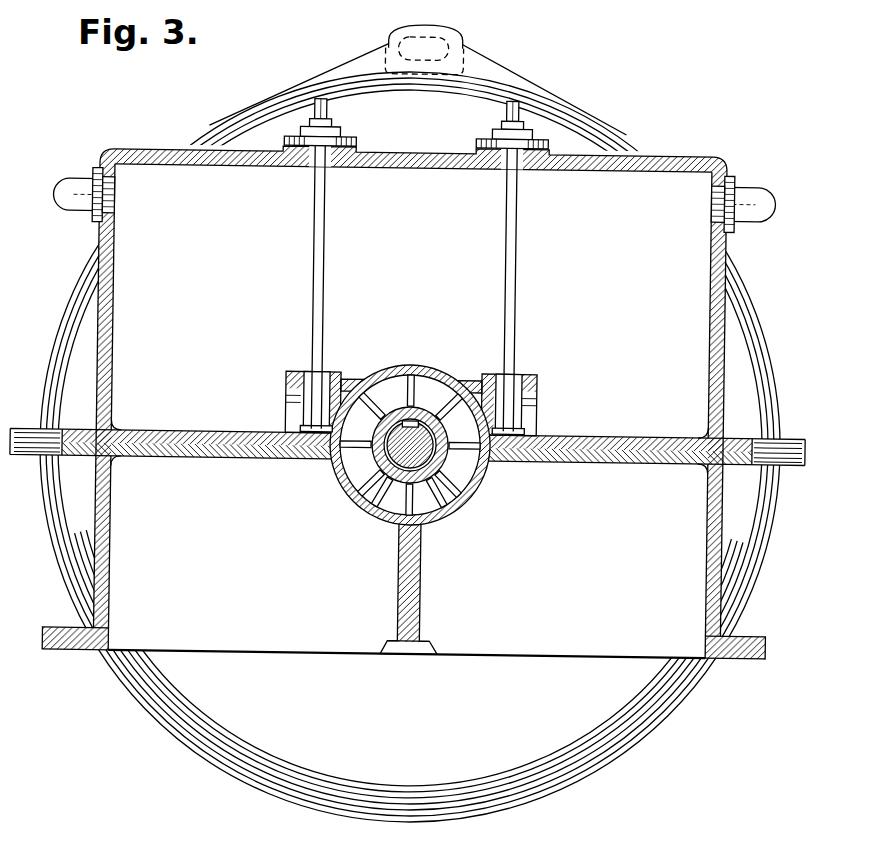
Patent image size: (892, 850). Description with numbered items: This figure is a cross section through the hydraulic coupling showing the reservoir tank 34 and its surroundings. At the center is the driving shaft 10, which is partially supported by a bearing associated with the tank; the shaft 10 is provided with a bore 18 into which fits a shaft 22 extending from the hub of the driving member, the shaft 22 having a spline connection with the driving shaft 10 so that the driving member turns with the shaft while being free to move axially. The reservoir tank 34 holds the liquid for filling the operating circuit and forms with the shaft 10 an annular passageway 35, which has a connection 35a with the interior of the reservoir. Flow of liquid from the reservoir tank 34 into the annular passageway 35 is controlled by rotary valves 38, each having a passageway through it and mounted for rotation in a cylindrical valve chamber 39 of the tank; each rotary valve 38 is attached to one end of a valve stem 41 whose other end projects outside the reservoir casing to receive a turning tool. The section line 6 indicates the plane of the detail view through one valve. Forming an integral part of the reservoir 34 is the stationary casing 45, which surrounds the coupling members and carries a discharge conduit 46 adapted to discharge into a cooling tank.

The section line 6- 6 is at (274, 403).
The driving shaft 10 is at (452, 467).
The bore 18 is at (430, 500).
The shaft 22 is at (400, 465).
The reservoir tank 34 is at (675, 190).
The annular passageway 35 is at (396, 385).
The connection 35a is at (563, 415).
The rotary valve 38 is at (312, 382).
The cylindrical valve chamber 39 is at (342, 378).
The valve stem 41 is at (310, 256).
The stationary casing 45 is at (182, 727).
The discharge conduit 46 is at (458, 47).